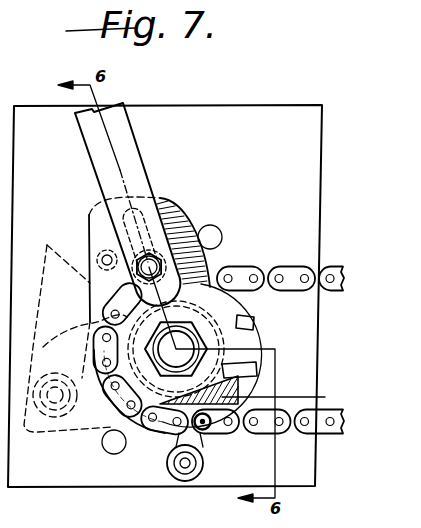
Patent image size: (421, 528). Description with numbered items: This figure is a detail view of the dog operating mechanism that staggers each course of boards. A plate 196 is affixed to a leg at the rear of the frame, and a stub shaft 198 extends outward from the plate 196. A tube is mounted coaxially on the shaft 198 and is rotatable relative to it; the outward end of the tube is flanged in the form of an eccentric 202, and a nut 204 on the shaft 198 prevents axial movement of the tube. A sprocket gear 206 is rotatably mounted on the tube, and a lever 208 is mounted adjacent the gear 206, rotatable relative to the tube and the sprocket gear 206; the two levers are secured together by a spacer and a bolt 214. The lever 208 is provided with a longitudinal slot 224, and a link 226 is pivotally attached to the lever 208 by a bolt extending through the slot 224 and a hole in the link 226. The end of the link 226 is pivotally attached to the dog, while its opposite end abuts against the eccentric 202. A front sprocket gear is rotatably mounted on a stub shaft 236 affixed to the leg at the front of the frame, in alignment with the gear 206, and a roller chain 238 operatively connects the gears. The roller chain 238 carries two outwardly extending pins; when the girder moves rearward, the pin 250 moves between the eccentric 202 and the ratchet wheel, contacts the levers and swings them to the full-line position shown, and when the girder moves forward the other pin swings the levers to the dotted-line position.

The plate 196 is at (298, 169).
The stub shaft 198 is at (243, 315).
The eccentric 202 is at (215, 366).
The nut 204 is at (202, 355).
The sprocket gear 206 is at (183, 233).
The lever 208 is at (72, 433).
The bolt 214 is at (102, 256).
The longitudinal slot 224 is at (108, 218).
The link 226 is at (124, 142).
The stub shaft 236 is at (160, 243).
The roller chain 238 is at (328, 268).
The pin 250 is at (210, 427).